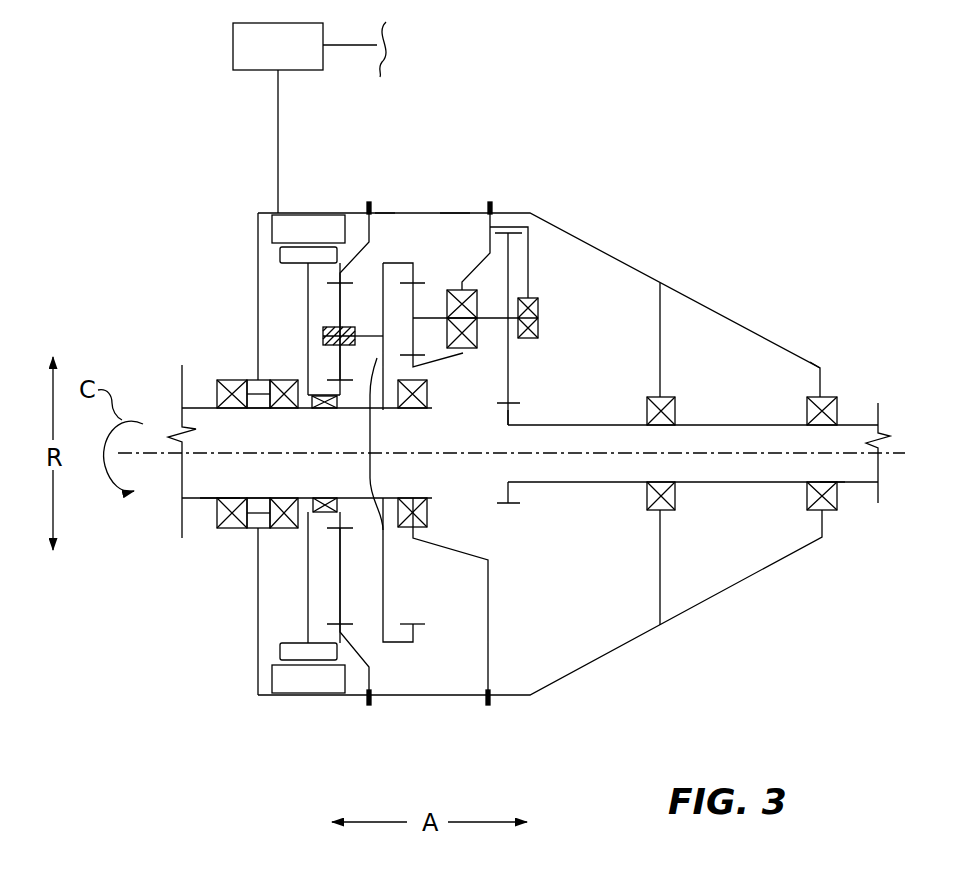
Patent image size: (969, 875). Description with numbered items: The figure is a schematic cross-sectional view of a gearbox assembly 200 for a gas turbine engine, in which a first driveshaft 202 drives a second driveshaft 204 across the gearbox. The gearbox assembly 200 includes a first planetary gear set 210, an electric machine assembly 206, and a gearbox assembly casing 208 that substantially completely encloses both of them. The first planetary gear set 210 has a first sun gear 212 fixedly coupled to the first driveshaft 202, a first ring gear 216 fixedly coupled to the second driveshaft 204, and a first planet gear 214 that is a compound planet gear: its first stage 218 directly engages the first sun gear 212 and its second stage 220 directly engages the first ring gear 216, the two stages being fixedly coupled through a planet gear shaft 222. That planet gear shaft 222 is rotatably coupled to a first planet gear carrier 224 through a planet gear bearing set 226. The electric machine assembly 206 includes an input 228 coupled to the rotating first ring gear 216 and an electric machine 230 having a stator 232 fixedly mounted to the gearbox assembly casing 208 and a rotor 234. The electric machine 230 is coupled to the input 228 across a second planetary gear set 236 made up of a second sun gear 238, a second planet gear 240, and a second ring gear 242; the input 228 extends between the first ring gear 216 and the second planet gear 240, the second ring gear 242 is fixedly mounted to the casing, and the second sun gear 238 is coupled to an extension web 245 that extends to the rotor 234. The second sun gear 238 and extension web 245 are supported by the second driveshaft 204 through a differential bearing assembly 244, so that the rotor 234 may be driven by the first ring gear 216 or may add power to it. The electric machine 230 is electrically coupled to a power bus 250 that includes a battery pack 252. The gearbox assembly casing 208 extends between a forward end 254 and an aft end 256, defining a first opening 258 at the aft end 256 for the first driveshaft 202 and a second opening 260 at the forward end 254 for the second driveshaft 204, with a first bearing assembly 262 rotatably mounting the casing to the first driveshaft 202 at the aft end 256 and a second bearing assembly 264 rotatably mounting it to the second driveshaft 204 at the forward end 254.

The gearbox assembly 200 is at (145, 128).
The first driveshaft 202 is at (748, 470).
The second driveshaft 204 is at (190, 483).
The electric machine assembly 206 is at (386, 234).
The gearbox assembly casing 208 is at (623, 262).
The first planetary gear set 210 is at (448, 221).
The first sun gear 212 is at (507, 416).
The first planet gear 214 is at (520, 255).
The first ring gear 216 is at (370, 441).
The first stage 218 is at (508, 377).
The second stage 220 is at (413, 298).
The planet gear shaft 222 is at (490, 322).
The first planet gear carrier 224 is at (486, 256).
The planet gear bearing set 226 is at (465, 349).
The input 228 is at (381, 334).
The electric machine 230 is at (251, 450).
The stator 232 is at (298, 212).
The rotor 234 is at (281, 253).
The second planetary gear set 236 is at (280, 326).
The second sun gear 238 is at (342, 388).
The second planet gear 240 is at (324, 349).
The second ring gear 242 is at (362, 202).
The differential bearing assembly 244 is at (325, 497).
The extension web 245 is at (310, 558).
The power bus 250 is at (200, 77).
The battery pack 252 is at (295, 59).
The forward end 254 is at (235, 762).
The aft end 256 is at (825, 331).
The first opening 258 is at (832, 470).
The second opening 260 is at (228, 477).
The first bearing assembly 262 is at (828, 396).
The second bearing assembly 264 is at (277, 530).